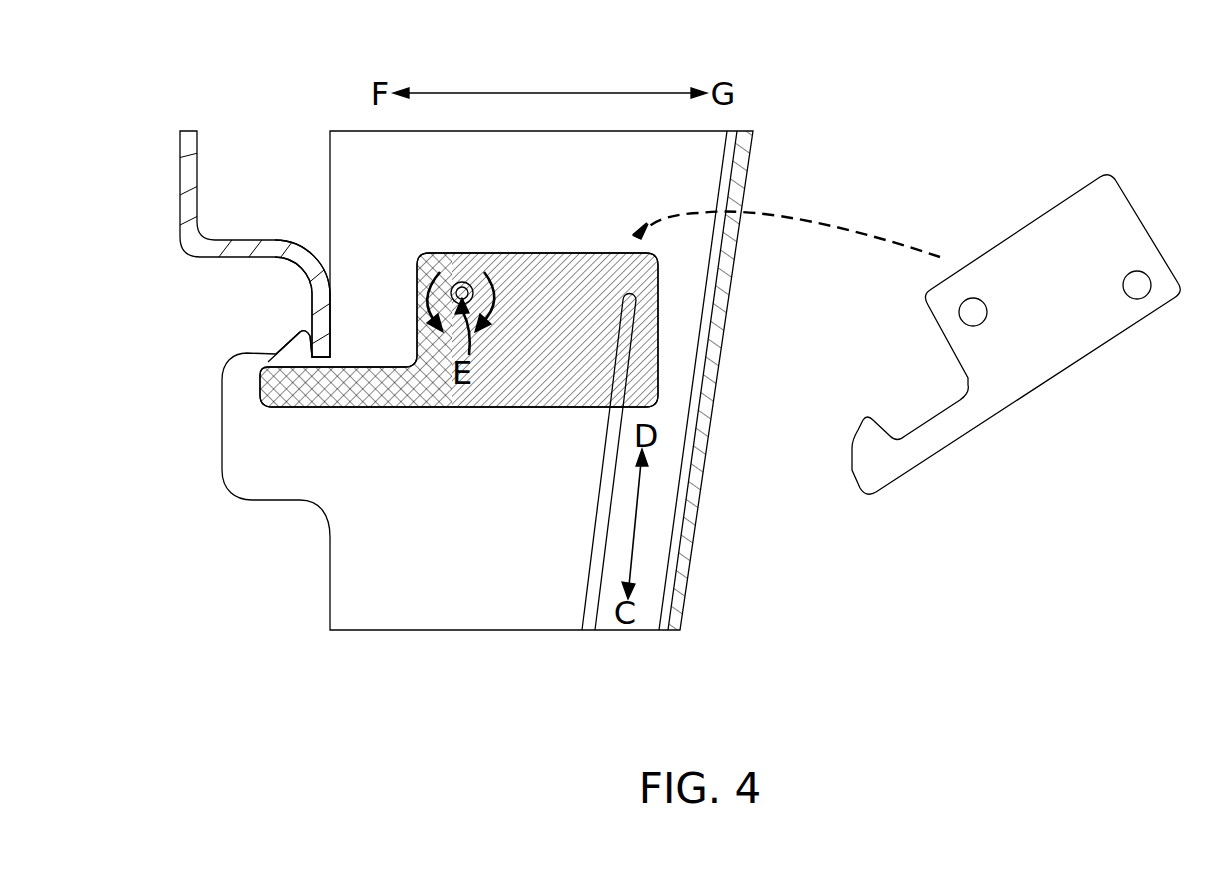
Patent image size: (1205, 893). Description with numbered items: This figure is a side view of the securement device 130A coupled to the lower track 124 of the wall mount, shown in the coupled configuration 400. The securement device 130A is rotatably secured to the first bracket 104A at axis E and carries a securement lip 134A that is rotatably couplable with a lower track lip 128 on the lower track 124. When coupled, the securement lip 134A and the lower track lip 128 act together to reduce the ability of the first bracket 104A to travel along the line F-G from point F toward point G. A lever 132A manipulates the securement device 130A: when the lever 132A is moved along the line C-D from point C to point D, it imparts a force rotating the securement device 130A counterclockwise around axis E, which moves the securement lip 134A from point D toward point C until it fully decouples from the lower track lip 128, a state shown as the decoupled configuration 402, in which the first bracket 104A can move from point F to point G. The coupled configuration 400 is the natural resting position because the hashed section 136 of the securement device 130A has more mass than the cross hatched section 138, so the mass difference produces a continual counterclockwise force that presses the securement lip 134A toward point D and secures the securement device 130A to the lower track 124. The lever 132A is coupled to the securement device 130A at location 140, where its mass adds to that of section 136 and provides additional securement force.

The first bracket 104A is at (352, 566).
The lower track 124 is at (190, 137).
The lower track lip 128 is at (318, 308).
The securement lip 134A is at (297, 343).
The securement device 130A is at (535, 268).
The section 136 is at (546, 384).
The section 138 is at (363, 404).
The location 140 is at (646, 378).
The lever 132A is at (593, 547).
The coupled configuration 400 is at (572, 288).
The decoupled configuration 402 is at (1065, 243).